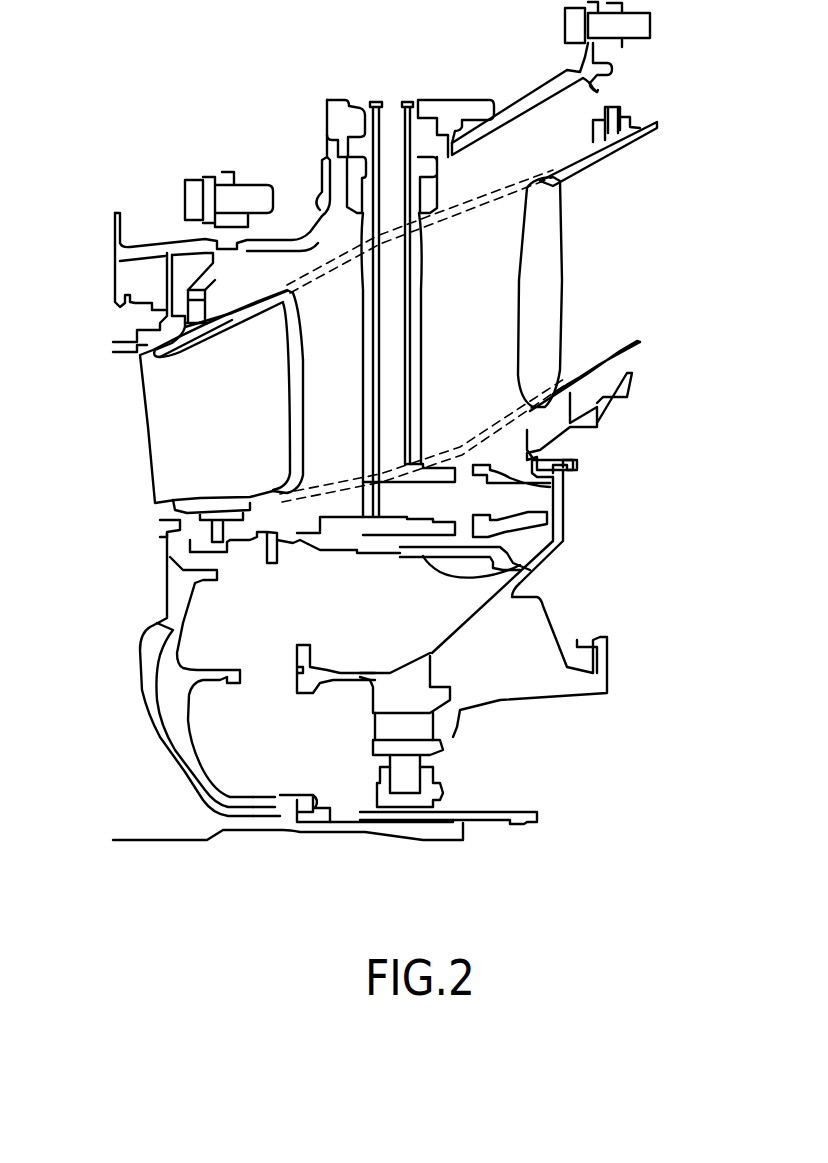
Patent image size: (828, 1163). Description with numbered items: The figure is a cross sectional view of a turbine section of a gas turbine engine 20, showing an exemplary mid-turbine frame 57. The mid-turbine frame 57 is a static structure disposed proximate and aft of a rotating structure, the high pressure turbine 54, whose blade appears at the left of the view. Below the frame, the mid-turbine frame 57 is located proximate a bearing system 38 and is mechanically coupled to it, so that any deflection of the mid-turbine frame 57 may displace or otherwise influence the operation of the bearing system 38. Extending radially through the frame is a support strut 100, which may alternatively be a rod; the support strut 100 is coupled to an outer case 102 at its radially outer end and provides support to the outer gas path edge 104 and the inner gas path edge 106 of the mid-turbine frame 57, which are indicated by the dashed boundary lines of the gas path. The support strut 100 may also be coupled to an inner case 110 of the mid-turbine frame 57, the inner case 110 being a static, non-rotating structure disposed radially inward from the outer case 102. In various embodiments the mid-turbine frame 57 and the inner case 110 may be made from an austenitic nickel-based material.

The gas turbine engine 20 is at (147, 89).
The bearing system 38 is at (402, 787).
The high pressure turbine 54 is at (128, 467).
The mid-turbine frame 57 is at (520, 565).
The support strut 100 is at (422, 355).
The outer case 102 is at (568, 75).
The outer gas path edge 104 is at (473, 210).
The inner gas path edge 106 is at (497, 423).
The inner case 110 is at (316, 550).